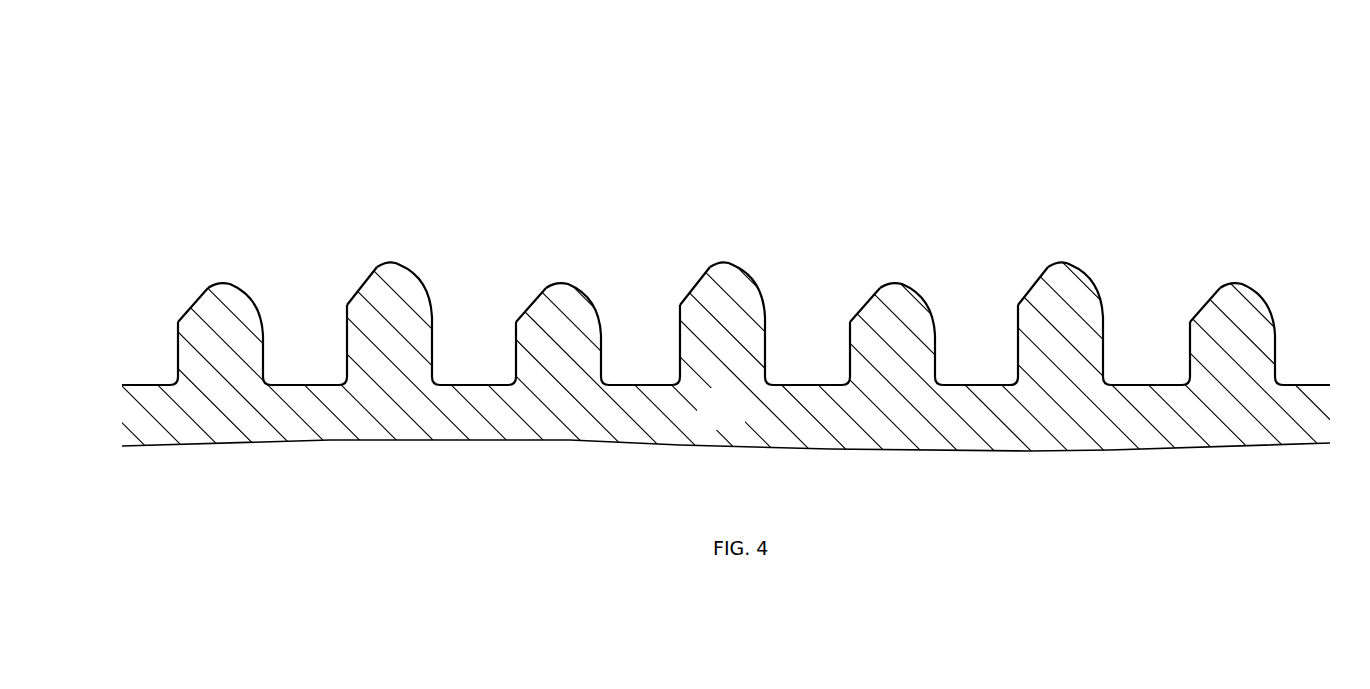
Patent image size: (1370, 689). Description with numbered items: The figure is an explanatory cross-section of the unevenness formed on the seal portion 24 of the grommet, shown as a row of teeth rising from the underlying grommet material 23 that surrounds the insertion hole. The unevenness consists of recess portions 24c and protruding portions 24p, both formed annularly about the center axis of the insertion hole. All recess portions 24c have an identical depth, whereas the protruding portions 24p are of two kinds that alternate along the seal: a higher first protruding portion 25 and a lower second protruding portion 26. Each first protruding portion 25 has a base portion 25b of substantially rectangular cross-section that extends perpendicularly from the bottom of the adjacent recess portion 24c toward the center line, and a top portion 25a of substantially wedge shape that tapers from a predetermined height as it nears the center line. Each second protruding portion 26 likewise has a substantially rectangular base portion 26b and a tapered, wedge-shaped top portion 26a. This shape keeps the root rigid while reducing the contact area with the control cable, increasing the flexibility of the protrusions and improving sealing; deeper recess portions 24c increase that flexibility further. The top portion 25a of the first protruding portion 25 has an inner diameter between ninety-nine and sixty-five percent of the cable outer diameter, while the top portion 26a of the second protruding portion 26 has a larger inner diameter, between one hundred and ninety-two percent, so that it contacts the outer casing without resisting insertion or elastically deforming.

The base portion 23 is at (735, 421).
The seal portion 24 is at (180, 97).
The protruding portion 24p is at (220, 262).
The recess portion 24c is at (143, 378).
The first protruding portion 25 is at (699, 275).
The top portion 25a is at (362, 287).
The base portion 25b is at (347, 330).
The second protruding portion 26 is at (700, 283).
The top portion 26a is at (193, 307).
The base portion 26b is at (178, 340).